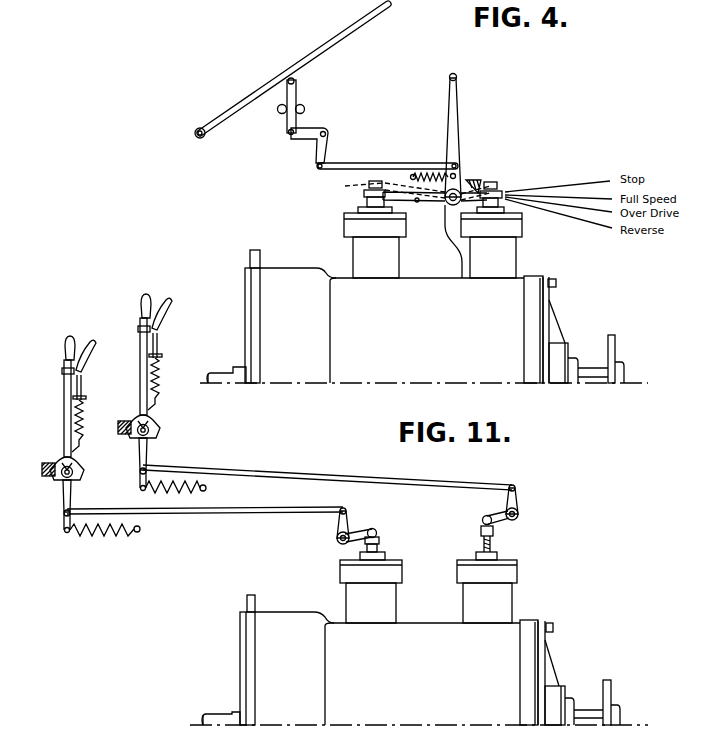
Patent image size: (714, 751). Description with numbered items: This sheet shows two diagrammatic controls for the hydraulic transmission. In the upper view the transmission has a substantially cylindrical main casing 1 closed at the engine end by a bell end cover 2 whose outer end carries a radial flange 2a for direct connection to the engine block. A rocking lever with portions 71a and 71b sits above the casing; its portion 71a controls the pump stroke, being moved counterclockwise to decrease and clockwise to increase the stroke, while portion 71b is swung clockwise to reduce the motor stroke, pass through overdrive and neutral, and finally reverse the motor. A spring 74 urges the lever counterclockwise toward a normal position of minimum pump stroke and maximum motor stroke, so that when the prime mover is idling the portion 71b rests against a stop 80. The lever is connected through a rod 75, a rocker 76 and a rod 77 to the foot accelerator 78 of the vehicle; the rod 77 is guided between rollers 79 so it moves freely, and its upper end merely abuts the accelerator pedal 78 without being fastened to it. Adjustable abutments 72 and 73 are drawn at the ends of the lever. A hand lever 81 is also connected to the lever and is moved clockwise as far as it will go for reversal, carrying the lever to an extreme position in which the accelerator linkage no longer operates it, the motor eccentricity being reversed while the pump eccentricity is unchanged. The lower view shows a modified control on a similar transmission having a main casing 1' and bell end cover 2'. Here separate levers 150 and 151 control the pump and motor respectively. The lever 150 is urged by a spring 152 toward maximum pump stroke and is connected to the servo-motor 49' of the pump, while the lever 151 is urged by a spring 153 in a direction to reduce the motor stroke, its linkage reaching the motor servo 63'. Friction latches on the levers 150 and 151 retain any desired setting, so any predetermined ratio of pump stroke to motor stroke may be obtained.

In FIG. 4, the main casing 1 is at (477, 329).
In FIG. 4, the bell end cover 2 is at (271, 317).
In FIG. 4, the radial flange 2a is at (258, 254).
In FIG. 4, the lever 71a is at (417, 202).
In FIG. 4, the lever 71b is at (463, 190).
In FIG. 4, the adjusting nut 72 is at (367, 187).
In FIG. 4, the adjusting nut 73 is at (498, 185).
In FIG. 4, the spring 74 is at (423, 173).
In FIG. 4, the rod 75 is at (350, 167).
In FIG. 4, the rocker 76 is at (313, 140).
In FIG. 4, the rod 77 is at (290, 125).
In FIG. 4, the foot accelerator 78 is at (323, 50).
In FIG. 4, the rollers 79 is at (305, 108).
In FIG. 4, the stop 80 is at (477, 183).
In FIG. 4, the hand lever 81 is at (453, 127).
In FIG. 11, the main casing 1' is at (472, 672).
In FIG. 11, the bell end cover 2' is at (268, 660).
In FIG. 11, the servo-motor 49' is at (386, 576).
In FIG. 11, the cylinder valve 63' is at (503, 570).
In FIG. 11, the lever 150 is at (65, 442).
In FIG. 11, the lever 151 is at (143, 378).
In FIG. 11, the spring 152 is at (97, 533).
In FIG. 11, the spring 153 is at (170, 492).